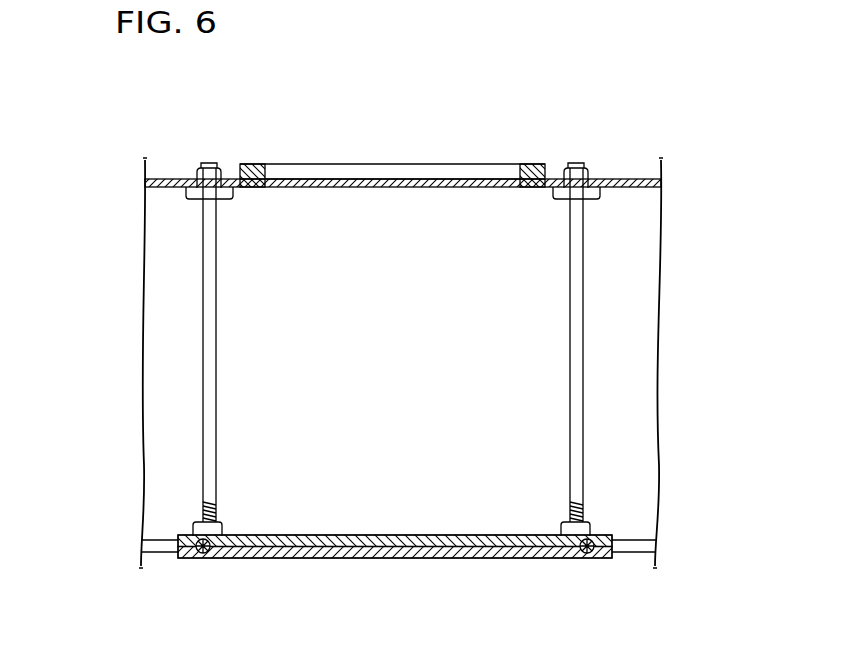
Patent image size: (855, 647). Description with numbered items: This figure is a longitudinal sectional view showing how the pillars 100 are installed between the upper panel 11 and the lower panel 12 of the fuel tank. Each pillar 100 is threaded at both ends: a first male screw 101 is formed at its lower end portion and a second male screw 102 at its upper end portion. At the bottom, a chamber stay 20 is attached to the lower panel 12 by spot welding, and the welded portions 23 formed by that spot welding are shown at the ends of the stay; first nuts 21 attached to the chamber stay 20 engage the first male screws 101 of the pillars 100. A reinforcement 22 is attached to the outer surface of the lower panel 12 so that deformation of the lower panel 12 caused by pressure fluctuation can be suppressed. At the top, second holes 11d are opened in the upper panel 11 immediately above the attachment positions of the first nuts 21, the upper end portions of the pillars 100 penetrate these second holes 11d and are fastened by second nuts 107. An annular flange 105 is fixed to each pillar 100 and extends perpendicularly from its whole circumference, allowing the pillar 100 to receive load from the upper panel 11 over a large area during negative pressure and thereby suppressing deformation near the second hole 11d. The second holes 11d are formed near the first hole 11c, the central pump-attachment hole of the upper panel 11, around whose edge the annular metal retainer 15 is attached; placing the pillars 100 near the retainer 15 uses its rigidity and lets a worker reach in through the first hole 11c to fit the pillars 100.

The upper panel 11 is at (165, 180).
The first hole 11c is at (522, 182).
The second hole 11d is at (240, 178).
The retainer 15 is at (397, 140).
The pillar 100 is at (217, 377).
The second male screw 102 is at (214, 163).
The second nut 107 is at (198, 172).
The annular flange 105 is at (222, 198).
The first male screw 101 is at (203, 510).
The first nut 21 is at (222, 528).
The lower panel 12 is at (165, 550).
The chamber stay 20 is at (395, 547).
The reinforcement 22 is at (482, 559).
The welded portion 23 is at (205, 553).